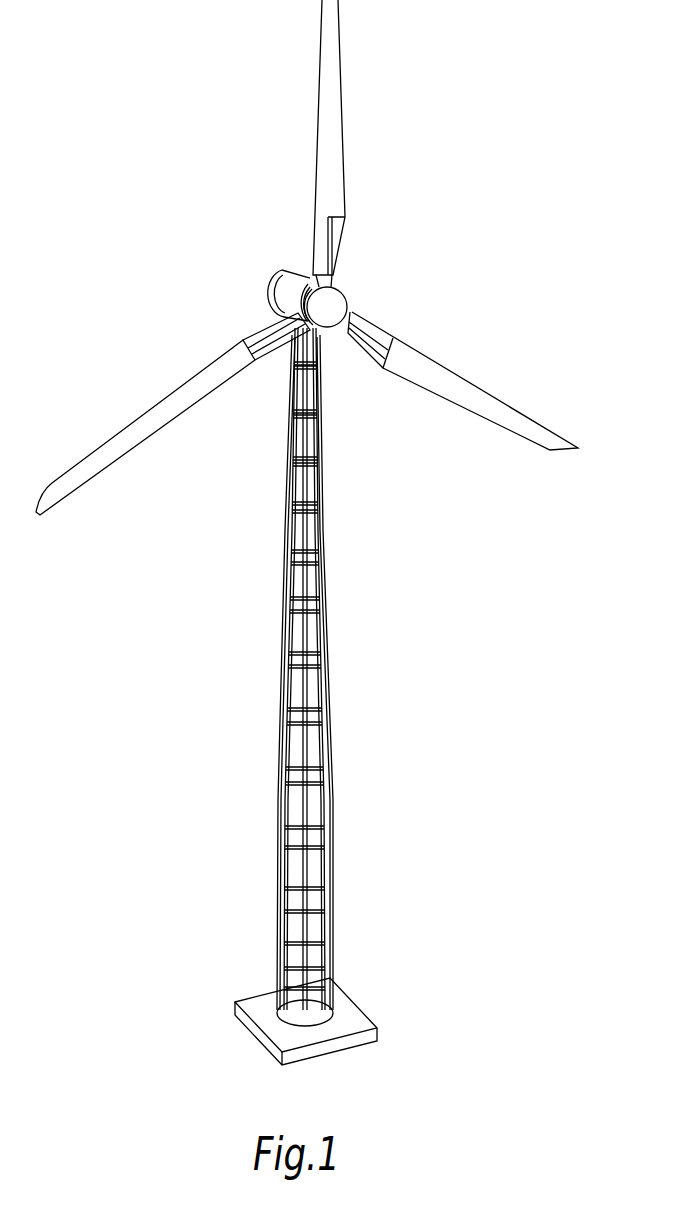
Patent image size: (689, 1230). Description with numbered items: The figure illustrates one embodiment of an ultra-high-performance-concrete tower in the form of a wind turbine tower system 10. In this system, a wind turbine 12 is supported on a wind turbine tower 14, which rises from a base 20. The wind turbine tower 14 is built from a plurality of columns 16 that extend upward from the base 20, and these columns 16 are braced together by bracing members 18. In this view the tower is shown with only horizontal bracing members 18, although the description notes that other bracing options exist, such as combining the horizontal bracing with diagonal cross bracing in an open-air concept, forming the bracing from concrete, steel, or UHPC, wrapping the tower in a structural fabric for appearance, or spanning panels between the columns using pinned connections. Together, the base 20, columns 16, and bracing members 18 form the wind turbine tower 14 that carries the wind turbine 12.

The wind turbine tower system 10 is at (466, 216).
The wind turbine 12 is at (285, 278).
The wind turbine tower 14 is at (313, 483).
The columns 16 is at (323, 868).
The bracing members 18 is at (323, 720).
The base 20 is at (355, 1020).